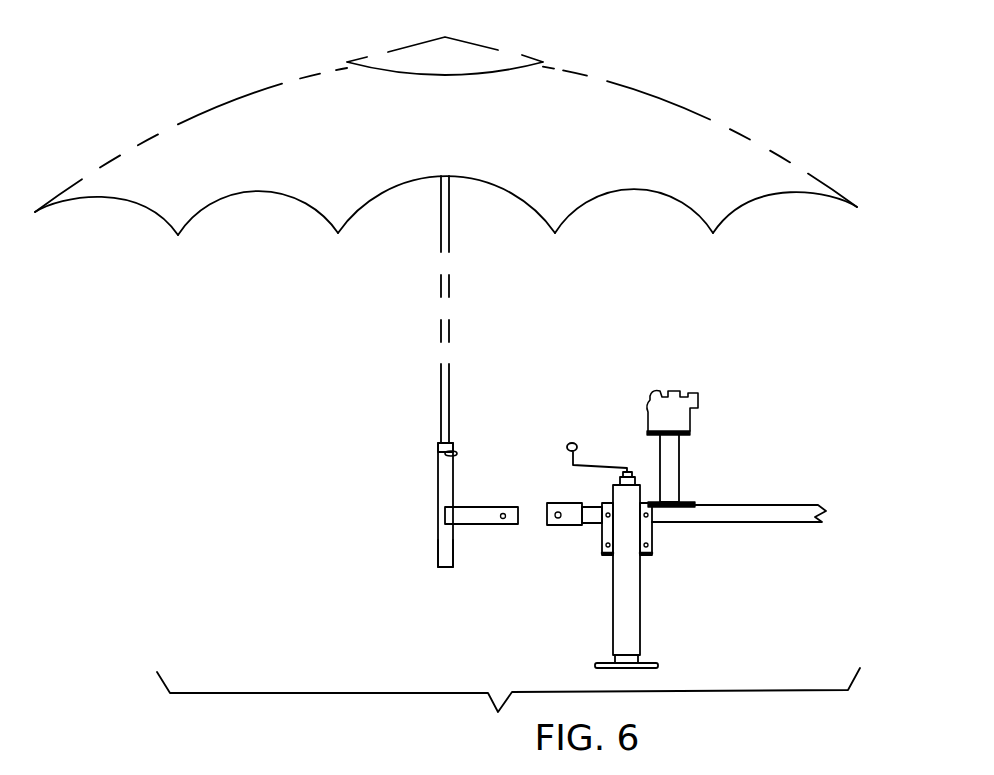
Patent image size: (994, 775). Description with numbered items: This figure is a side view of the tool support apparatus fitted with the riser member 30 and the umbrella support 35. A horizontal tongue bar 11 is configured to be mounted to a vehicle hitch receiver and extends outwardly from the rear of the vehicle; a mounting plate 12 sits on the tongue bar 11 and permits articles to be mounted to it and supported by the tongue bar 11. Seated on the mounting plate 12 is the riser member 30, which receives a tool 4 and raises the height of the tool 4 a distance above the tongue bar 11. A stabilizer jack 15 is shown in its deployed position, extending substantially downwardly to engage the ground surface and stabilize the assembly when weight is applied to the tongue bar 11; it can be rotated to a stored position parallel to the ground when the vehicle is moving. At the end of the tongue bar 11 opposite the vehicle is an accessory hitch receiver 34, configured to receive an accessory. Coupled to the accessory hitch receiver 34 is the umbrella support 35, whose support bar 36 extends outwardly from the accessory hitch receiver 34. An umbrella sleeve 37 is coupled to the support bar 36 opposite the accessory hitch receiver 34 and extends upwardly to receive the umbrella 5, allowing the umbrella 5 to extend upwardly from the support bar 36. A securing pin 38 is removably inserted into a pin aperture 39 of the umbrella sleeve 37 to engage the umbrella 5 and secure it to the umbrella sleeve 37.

The umbrella 5 is at (607, 83).
The tool 4 is at (677, 391).
The riser member 30 is at (680, 460).
The mounting plate 12 is at (695, 503).
The trailer tongue beam 11 is at (748, 517).
The stabilizer jack 15 is at (642, 628).
The accessory hitch receiver 34 is at (570, 525).
The umbrella support 35 is at (438, 567).
The support bar 36 is at (475, 524).
The umbrella sleeve 37 is at (438, 491).
The securing pin 38 is at (455, 448).
The pin aperture 39 is at (445, 453).